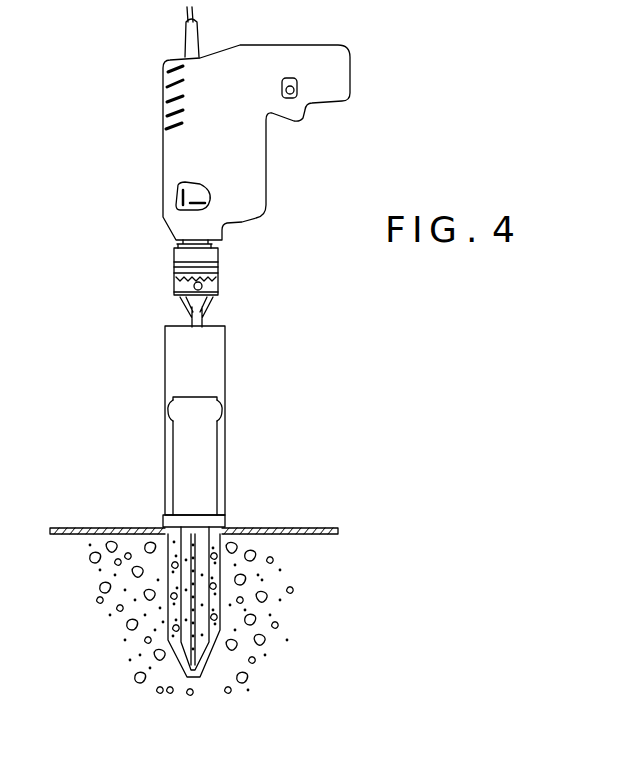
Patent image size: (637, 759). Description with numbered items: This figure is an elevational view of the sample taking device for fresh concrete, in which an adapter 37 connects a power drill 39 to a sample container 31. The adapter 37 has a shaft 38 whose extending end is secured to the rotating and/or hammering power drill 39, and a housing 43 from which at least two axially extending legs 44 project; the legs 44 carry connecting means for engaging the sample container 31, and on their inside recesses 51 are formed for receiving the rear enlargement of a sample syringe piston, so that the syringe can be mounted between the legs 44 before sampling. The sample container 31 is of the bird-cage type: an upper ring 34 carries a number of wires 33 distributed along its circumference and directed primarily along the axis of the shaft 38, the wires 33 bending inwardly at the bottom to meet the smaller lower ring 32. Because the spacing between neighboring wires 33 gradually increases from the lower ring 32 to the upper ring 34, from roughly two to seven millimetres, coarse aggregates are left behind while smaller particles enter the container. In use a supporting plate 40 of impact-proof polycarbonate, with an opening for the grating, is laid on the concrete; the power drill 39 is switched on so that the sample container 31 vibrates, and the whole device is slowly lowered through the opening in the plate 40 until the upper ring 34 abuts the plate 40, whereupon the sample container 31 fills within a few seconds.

The sample container 31 is at (242, 604).
The lower ring 32 is at (183, 680).
The wires 33 is at (163, 607).
The upper ring 34 is at (220, 520).
The adapter 37 is at (188, 426).
The shaft 38 is at (205, 318).
The power drill 39 is at (255, 152).
The supporting plate 40 is at (70, 527).
The housing 43 is at (212, 368).
The legs 44 is at (168, 444).
The recesses 51 is at (170, 413).